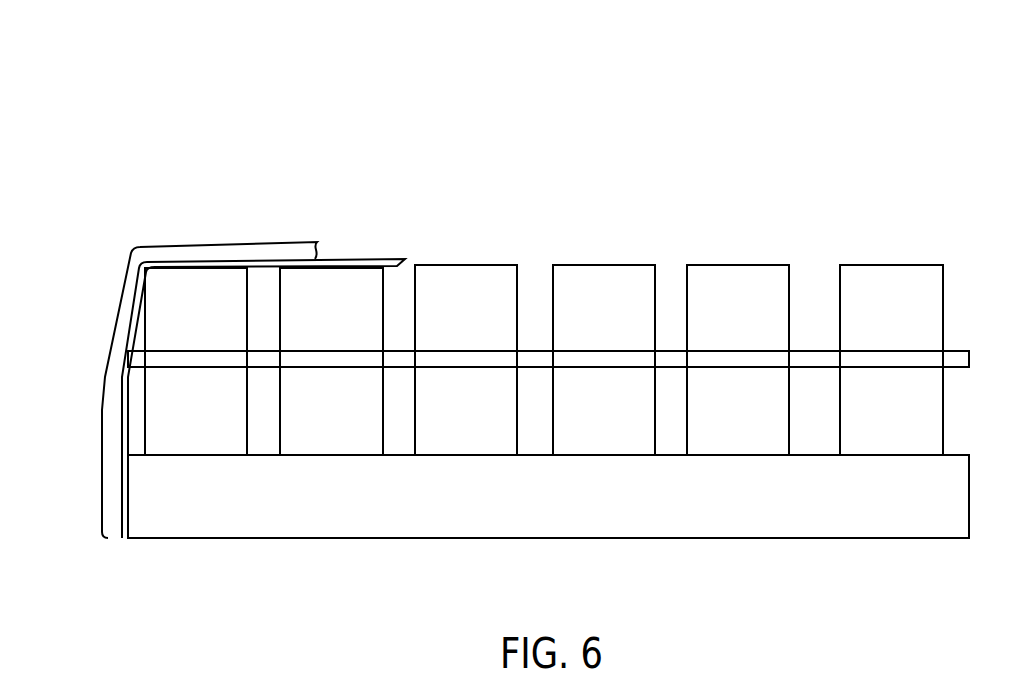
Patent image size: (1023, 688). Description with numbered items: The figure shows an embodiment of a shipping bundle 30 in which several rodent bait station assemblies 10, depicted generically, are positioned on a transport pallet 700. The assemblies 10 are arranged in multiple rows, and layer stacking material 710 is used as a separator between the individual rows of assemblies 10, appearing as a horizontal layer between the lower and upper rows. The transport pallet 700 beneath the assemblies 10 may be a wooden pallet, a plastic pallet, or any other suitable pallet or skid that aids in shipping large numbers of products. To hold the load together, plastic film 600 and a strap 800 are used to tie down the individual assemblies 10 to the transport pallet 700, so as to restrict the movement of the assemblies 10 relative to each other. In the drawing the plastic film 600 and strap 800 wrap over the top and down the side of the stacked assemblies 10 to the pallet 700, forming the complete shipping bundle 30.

The shipping bundle 30 is at (605, 119).
The rodent bait station assembly 10 is at (945, 305).
The plastic film 600 is at (380, 258).
The transport pallet 700 is at (405, 538).
The layer stacking material 710 is at (525, 351).
The strap 800 is at (212, 246).